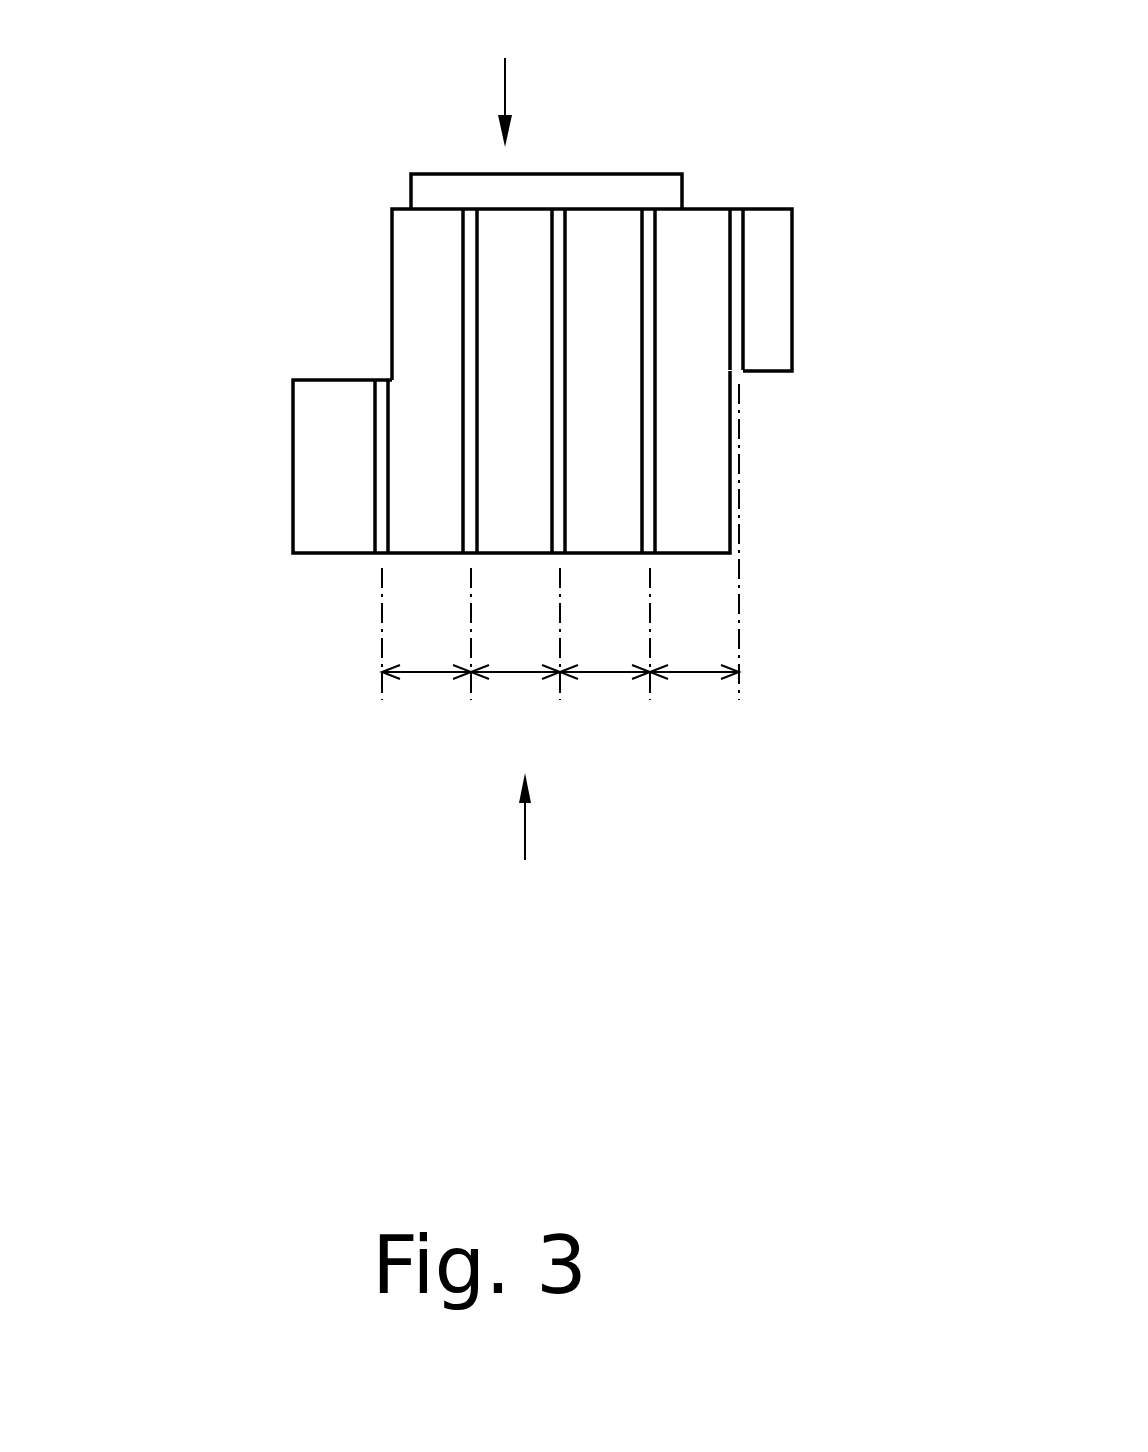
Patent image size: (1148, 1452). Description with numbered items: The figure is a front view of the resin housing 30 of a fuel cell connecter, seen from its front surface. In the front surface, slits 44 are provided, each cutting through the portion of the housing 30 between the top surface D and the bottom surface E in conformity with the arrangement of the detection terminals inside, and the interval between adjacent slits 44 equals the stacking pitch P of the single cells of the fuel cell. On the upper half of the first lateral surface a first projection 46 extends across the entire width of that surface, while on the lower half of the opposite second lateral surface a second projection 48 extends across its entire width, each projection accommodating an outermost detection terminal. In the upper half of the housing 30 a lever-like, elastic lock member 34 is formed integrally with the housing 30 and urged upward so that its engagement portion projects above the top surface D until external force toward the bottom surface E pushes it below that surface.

The housing 30 is at (598, 1060).
The lock member 34 is at (593, 174).
The slits 44 is at (390, 433).
The first projection 46 is at (790, 284).
The second projection 48 is at (302, 446).
The stacking pitch P is at (560, 555).
The top surface D is at (509, 77).
The bottom surface E is at (531, 847).